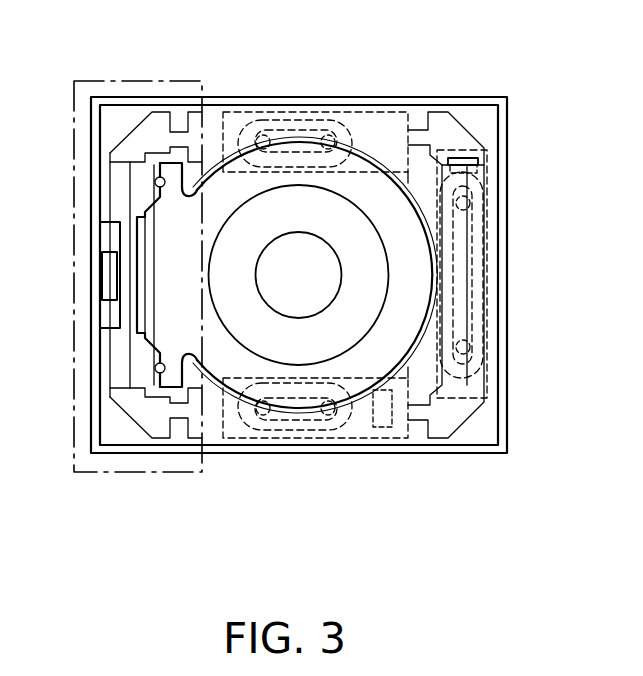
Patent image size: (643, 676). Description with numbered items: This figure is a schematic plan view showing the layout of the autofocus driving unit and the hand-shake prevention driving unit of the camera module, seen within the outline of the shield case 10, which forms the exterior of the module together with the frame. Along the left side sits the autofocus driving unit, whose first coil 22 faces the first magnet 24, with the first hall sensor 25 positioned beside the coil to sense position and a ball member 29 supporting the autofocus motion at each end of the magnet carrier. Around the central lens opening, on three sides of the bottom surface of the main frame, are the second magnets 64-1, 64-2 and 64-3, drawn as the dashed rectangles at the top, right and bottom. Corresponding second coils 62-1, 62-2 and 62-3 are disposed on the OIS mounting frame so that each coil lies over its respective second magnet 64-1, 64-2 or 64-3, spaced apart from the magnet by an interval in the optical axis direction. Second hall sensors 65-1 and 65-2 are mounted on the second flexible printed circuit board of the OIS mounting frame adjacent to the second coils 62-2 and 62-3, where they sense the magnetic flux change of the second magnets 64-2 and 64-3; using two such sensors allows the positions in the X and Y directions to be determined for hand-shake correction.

The shield case 10 is at (450, 96).
The first coil 22 is at (104, 315).
The first magnet 24 is at (140, 241).
The first hall sensor 25 is at (106, 277).
The ball member 29 is at (155, 182).
The second coil 62-1 is at (333, 137).
The second coil 62-2 is at (482, 267).
The second coil 62-3 is at (351, 430).
The second magnet 64-1 is at (220, 136).
The second magnet 64-2 is at (462, 400).
The second magnet 64-3 is at (220, 418).
The second hall sensor 65-1 is at (462, 158).
The second hall sensor 65-2 is at (383, 430).